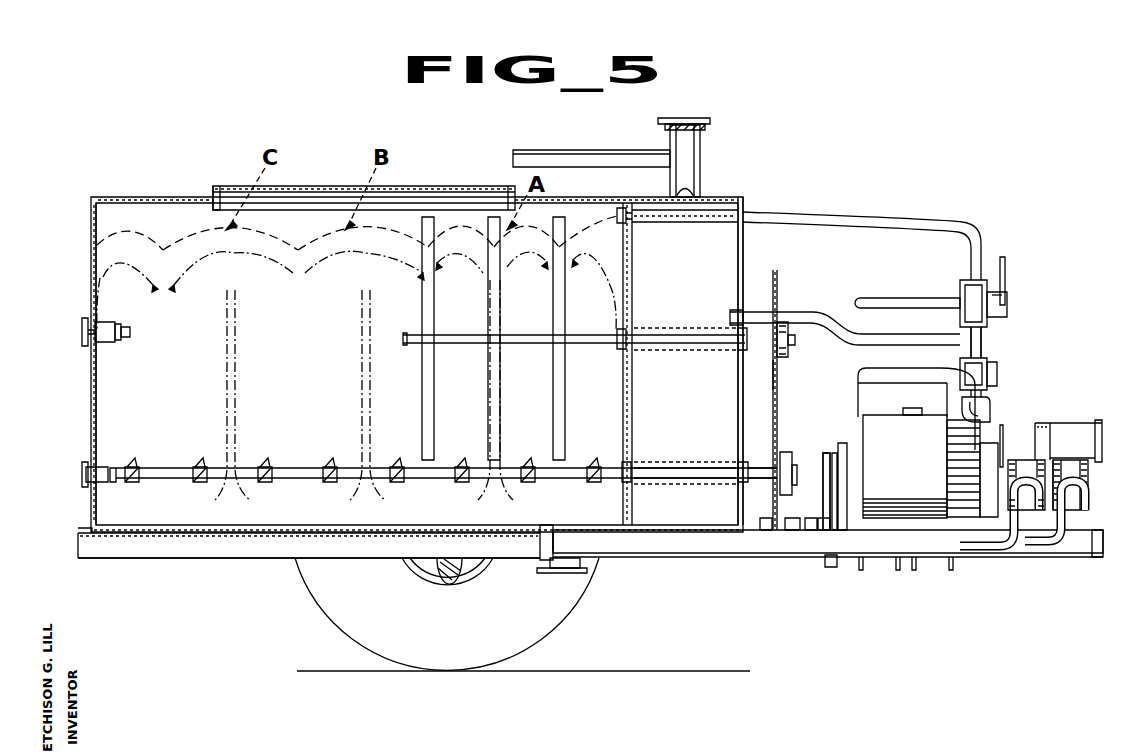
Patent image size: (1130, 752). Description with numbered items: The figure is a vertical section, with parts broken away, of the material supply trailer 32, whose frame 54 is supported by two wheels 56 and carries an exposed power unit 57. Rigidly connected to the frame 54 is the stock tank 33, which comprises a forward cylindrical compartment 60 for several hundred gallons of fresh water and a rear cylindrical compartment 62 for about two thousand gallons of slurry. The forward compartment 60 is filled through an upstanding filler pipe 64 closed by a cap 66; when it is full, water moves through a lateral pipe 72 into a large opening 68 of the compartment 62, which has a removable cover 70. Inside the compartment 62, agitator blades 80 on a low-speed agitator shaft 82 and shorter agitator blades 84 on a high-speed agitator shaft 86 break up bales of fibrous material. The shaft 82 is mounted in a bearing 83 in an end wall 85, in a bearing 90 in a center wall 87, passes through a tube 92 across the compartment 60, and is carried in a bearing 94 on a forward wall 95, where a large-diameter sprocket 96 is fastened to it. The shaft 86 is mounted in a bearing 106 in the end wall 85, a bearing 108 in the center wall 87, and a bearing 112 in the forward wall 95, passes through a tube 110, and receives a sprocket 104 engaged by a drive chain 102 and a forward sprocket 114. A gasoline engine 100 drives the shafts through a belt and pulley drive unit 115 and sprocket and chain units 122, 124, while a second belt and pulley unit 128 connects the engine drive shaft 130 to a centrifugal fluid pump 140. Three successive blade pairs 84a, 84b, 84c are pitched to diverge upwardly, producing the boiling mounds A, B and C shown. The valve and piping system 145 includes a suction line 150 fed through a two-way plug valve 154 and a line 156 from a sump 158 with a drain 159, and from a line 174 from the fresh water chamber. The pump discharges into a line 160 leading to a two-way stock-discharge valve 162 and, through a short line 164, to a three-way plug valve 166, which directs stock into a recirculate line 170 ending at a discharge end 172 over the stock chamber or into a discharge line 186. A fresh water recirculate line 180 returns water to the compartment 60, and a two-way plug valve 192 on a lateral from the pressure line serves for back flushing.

The trailer 32 is at (367, 554).
The stock tank 33 is at (156, 198).
The frame 54 is at (245, 552).
The wheels 56 is at (447, 644).
The power unit 57 is at (944, 368).
The forward cylindrical compartment 60 is at (697, 276).
The rear cylindrical compartment 62 is at (318, 339).
The filler pipe 64 is at (700, 152).
The cap 66 is at (681, 120).
The opening 68 is at (217, 198).
The cover 70 is at (295, 185).
The lateral pipe 72 is at (540, 152).
The agitator blades 80 is at (424, 320).
The low-speed agitator shaft 82 is at (122, 330).
The bearing 83 is at (88, 322).
The agitator blades 84 is at (200, 483).
The pair of high-speed agitator blades 84a is at (527, 466).
The pair of high-speed agitator blades 84b is at (397, 466).
The pair of high-speed agitator blades 84c is at (265, 466).
The end wall 85 is at (91, 243).
The high-speed agitator shaft 86 is at (305, 479).
The center wall 87 is at (634, 375).
The bearing 90 is at (616, 340).
The tube 92 is at (657, 332).
The bearing 94 is at (740, 336).
The forward wall 95 is at (740, 236).
The large-diameter sprocket 96 is at (778, 305).
The gasoline engine 100 is at (890, 378).
The drive chain 102 is at (779, 374).
The sprocket 104 is at (772, 497).
The bearing 106 is at (102, 465).
The bearing 108 is at (628, 462).
The tube 110 is at (665, 467).
The bearing 112 is at (735, 465).
The sprocket 114 is at (790, 452).
The belt and pulley drive unit 115 is at (822, 494).
The sprocket and chain unit 122 is at (762, 522).
The sprocket and chain unit 124 is at (777, 275).
The second belt and pulley unit 128 is at (829, 450).
The drive shaft 130 is at (858, 462).
The fluid pump 140 is at (985, 500).
The valve and piping system 145 is at (986, 242).
The suction line 150 is at (990, 490).
The two-way plug valve 154 is at (1022, 460).
The line 156 is at (940, 548).
The sump 158 is at (540, 544).
The drain 159 is at (560, 575).
The line 160 is at (990, 432).
The two-way stock-discharge valve 162 is at (992, 376).
The short line 164 is at (975, 340).
The three-way plug valve 166 is at (966, 300).
The recirculate line 170 is at (820, 222).
The discharge end 172 is at (618, 216).
The line 174 is at (1064, 540).
The fresh water recirculate line 180 is at (822, 324).
The discharge line 186 is at (872, 300).
The two-way plug valve 192 is at (992, 402).